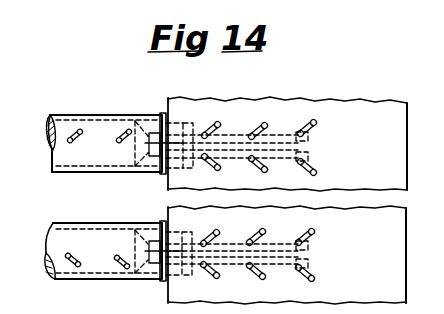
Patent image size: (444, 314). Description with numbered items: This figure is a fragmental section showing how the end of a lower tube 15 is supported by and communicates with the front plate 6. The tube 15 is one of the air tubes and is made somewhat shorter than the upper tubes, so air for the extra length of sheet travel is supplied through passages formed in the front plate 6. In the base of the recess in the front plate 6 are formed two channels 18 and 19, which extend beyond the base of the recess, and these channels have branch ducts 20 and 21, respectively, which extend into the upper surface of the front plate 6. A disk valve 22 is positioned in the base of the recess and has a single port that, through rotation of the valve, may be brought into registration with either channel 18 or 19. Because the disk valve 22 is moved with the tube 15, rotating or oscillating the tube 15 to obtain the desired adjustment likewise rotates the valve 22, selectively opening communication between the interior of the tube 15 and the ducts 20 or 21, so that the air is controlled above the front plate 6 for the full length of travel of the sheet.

The front plate 6 is at (364, 109).
The lower tube 15 is at (97, 118).
The channel 18 is at (288, 240).
The channel 19 is at (278, 263).
The branch duct 20 is at (256, 236).
The branch duct 21 is at (252, 271).
The disk valve 22 is at (192, 274).